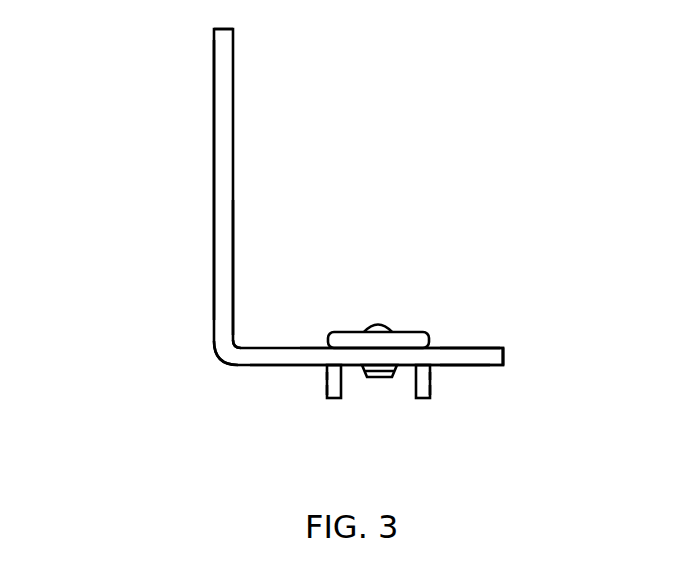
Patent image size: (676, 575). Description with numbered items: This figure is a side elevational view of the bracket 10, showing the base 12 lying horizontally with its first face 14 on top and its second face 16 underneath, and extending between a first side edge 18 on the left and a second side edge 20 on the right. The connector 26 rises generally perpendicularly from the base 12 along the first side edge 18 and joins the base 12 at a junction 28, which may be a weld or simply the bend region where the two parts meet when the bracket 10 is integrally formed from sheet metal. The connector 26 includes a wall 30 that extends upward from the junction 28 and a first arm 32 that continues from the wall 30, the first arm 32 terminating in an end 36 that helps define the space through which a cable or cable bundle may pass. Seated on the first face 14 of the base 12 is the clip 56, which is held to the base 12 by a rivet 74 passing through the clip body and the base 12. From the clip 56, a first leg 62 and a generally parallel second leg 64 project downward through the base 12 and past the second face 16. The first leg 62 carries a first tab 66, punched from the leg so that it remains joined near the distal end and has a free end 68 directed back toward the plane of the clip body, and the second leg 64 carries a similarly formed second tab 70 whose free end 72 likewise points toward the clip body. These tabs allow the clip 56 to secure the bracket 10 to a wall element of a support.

The bracket 10 is at (337, 233).
The base 12 is at (475, 347).
The first face 14 is at (456, 347).
The second face 16 is at (247, 367).
The first side edge 18 is at (249, 364).
The second side edge 20 is at (505, 355).
The connector 26 is at (184, 254).
The junction 28 is at (223, 346).
The wall 30 is at (222, 310).
The first arm 32 is at (221, 187).
The end 36 is at (221, 49).
The clip 56 is at (344, 330).
The first leg 62 is at (341, 385).
The second leg 64 is at (415, 385).
The first tab 66 is at (326, 380).
The free end 68 is at (325, 372).
The second tab 70 is at (432, 380).
The free end 72 is at (432, 372).
The rivet 74 is at (378, 327).